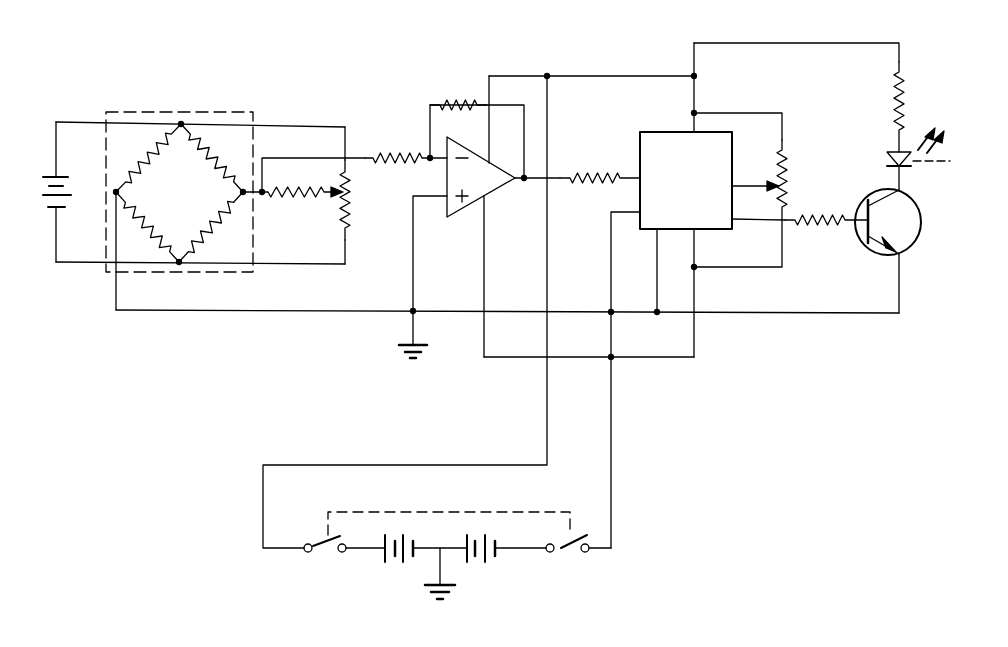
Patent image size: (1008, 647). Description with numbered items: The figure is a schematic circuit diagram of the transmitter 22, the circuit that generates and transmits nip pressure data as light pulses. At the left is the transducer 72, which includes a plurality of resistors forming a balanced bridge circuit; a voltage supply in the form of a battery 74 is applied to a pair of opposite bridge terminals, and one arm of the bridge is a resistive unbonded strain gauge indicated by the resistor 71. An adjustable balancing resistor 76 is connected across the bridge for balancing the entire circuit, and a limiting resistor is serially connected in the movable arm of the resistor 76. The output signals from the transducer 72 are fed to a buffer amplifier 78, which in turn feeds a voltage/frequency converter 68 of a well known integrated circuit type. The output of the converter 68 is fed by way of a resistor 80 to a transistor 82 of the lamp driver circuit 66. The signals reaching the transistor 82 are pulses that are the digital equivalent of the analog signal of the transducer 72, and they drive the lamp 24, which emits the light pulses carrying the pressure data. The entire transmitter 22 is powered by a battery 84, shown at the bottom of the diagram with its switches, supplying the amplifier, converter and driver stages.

The transmitter 22 is at (858, 449).
The lamp 24 is at (887, 154).
The lamp driver circuit 66 is at (866, 235).
The voltage/frequency converter 68 is at (660, 131).
The resistor 71 is at (214, 222).
The transducer 72 is at (179, 171).
The battery 74 is at (66, 180).
The adjustable balancing resistor 76 is at (351, 201).
The buffer amplifier 78 is at (472, 210).
The resistor 80 is at (821, 226).
The transistor 82 is at (871, 252).
The battery 84 is at (452, 506).